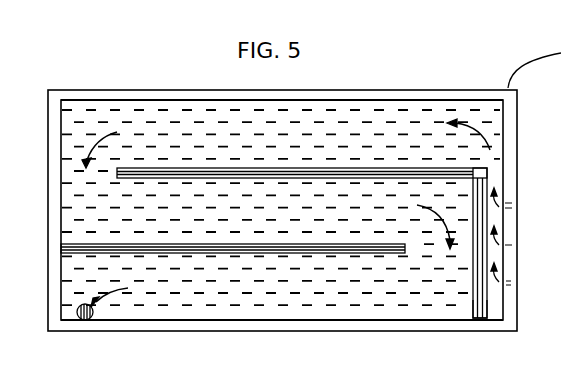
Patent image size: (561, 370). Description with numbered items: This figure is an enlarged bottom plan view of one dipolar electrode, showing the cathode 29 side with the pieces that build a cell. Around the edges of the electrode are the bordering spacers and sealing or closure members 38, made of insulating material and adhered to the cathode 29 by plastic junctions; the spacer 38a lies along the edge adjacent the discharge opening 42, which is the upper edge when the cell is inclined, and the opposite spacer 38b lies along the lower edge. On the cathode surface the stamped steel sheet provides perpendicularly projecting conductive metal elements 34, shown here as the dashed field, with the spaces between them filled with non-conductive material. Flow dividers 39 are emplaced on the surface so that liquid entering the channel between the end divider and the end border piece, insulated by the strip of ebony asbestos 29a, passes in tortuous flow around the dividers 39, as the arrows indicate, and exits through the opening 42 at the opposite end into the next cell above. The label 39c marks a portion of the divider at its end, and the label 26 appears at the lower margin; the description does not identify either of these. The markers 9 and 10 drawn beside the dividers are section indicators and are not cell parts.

The bordering spacer 38 is at (50, 112).
The spacer adjacent the discharge opening 38a is at (336, 322).
The opposite spacer 38b is at (265, 97).
The cathode 29 is at (326, 114).
The strip of ebony asbestos 29a is at (497, 294).
The conductive metal elements 34 is at (434, 108).
The flow divider 39 is at (221, 249).
The baffle end 39c is at (482, 319).
The discharge opening 42 is at (85, 321).
The housing 26 is at (257, 367).
The section line 9- 9 is at (340, 224).
The section line 10- 10 is at (468, 271).